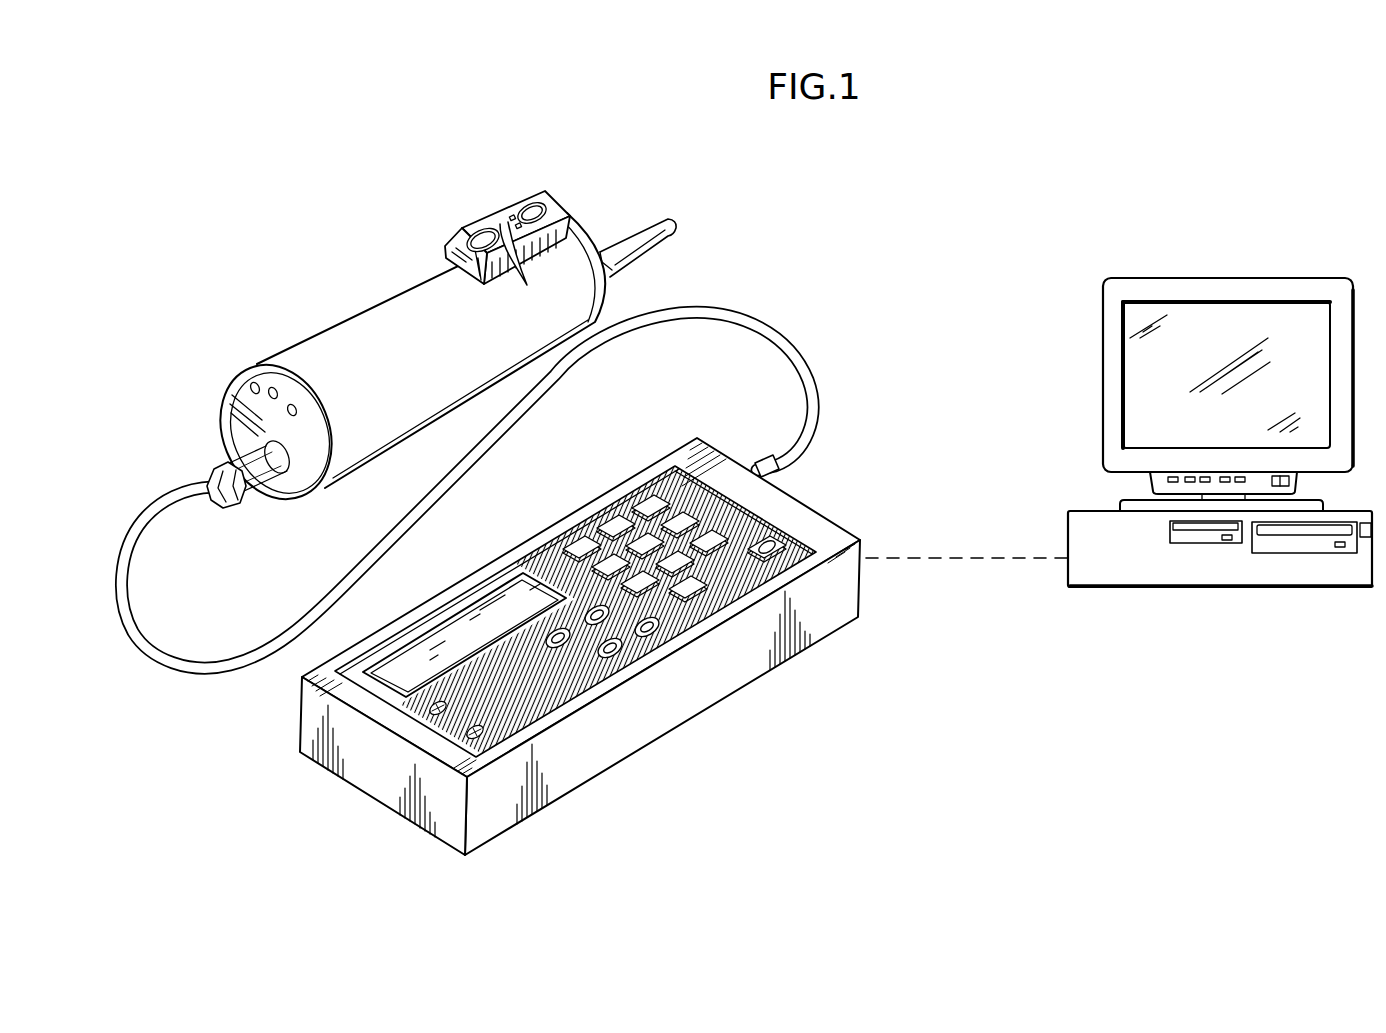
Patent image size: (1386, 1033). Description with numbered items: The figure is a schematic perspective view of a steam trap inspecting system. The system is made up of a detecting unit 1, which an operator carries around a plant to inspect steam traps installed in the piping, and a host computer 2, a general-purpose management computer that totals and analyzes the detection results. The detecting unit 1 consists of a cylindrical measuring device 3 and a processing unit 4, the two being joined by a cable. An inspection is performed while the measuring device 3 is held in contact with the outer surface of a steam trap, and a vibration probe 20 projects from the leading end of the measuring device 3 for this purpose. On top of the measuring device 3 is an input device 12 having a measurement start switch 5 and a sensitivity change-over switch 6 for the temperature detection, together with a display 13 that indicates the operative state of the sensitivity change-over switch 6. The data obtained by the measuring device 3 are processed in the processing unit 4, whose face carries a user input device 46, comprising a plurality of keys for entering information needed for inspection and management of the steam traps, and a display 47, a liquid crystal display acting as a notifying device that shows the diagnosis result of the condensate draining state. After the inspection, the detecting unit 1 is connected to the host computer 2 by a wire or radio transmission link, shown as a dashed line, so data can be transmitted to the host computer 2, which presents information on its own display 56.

The detecting unit 1 is at (474, 314).
The host computer 2 is at (1202, 381).
The measuring device 3 is at (335, 324).
The processing unit 4 is at (580, 642).
The measurement start switch 5 is at (480, 238).
The sensitivity change-over switch 6 is at (515, 188).
The input device 12 is at (494, 198).
The display 13 is at (522, 270).
The vibration probe 20 is at (673, 232).
The user input device 46 is at (640, 487).
The display 47 is at (476, 621).
The display 56 is at (1138, 356).